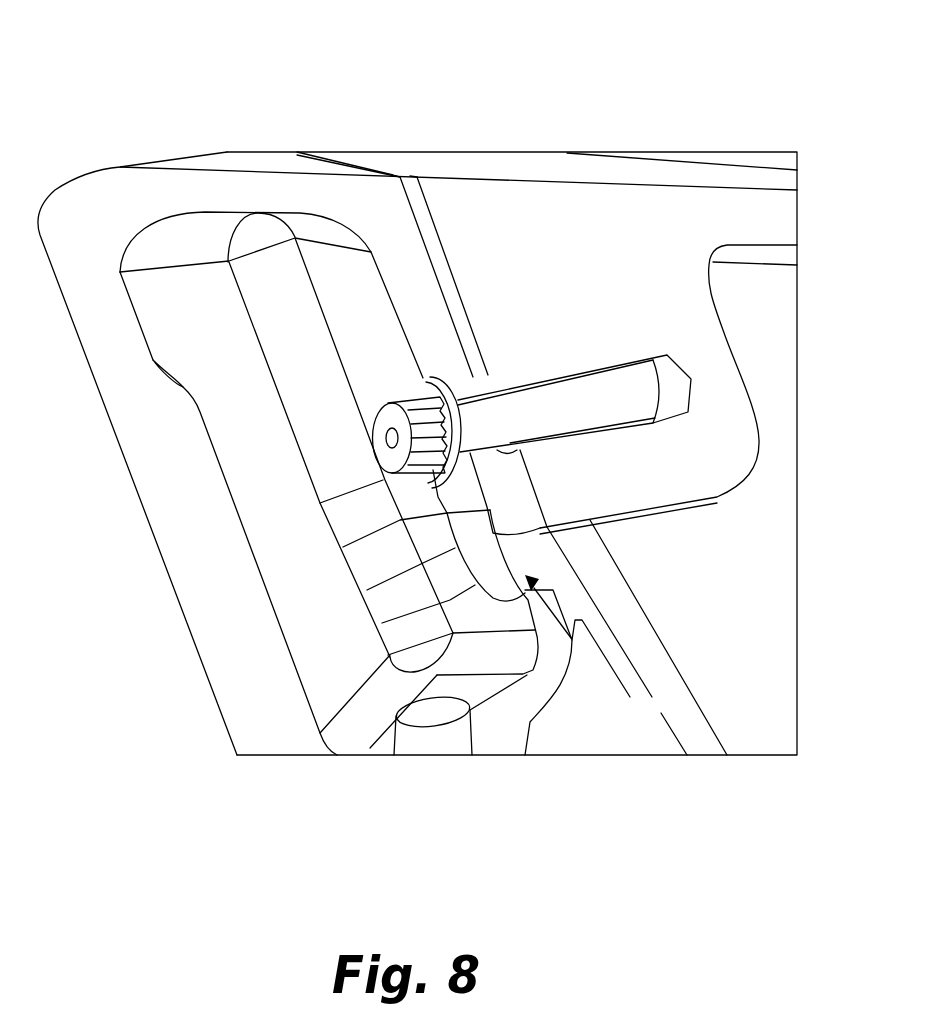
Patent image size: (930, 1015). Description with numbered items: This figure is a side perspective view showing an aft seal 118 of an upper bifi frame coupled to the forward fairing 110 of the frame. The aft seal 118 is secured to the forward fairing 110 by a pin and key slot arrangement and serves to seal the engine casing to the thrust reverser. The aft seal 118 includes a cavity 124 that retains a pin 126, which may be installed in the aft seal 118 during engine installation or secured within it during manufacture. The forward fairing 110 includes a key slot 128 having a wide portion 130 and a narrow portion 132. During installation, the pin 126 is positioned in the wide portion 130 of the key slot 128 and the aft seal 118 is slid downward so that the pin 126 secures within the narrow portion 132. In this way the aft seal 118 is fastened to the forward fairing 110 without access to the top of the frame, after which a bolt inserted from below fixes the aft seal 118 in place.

The forward fairing 110 is at (314, 192).
The aft seal 118 is at (683, 236).
The cavity 124 is at (683, 390).
The pin 126 is at (620, 428).
The key slot 128 is at (505, 565).
The wide portion 130 is at (637, 637).
The narrow portion 132 is at (480, 380).